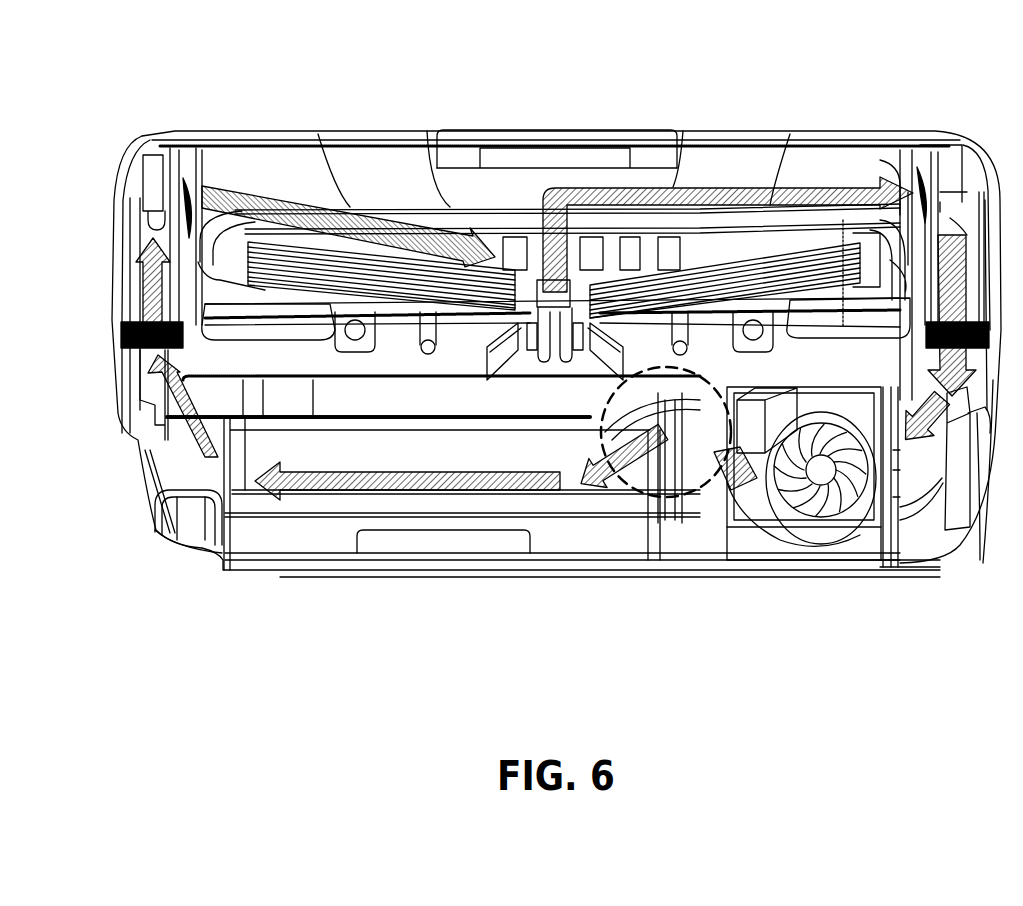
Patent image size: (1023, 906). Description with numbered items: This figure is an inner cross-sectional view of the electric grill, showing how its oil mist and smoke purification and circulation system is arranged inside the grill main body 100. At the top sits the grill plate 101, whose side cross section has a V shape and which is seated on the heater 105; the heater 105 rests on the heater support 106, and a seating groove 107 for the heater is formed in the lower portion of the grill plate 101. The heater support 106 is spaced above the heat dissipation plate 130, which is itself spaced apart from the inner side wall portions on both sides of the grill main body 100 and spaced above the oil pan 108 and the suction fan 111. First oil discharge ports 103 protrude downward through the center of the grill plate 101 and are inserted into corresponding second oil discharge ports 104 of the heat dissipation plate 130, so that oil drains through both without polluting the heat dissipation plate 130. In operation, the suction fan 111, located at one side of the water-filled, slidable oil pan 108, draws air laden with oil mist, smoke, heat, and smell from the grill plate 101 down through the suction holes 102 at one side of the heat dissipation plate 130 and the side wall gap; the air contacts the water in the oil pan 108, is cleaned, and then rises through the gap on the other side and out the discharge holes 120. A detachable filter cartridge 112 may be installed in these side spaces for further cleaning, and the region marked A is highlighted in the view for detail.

The grill main body 100 is at (947, 560).
The grill plate 101 is at (735, 232).
The suction holes 102 is at (898, 165).
The first oil discharge ports 103 is at (543, 355).
The second oil discharge ports 104 is at (503, 357).
The heater 105 is at (353, 345).
The heater support 106 is at (428, 355).
The seating groove 107 is at (333, 323).
The oil pan 108 is at (585, 540).
The suction fan 111 is at (824, 533).
The filter cartridge 112 is at (117, 425).
The discharge holes 120 is at (198, 188).
The heat dissipation plate 130 is at (963, 187).
The pump region A is at (661, 342).